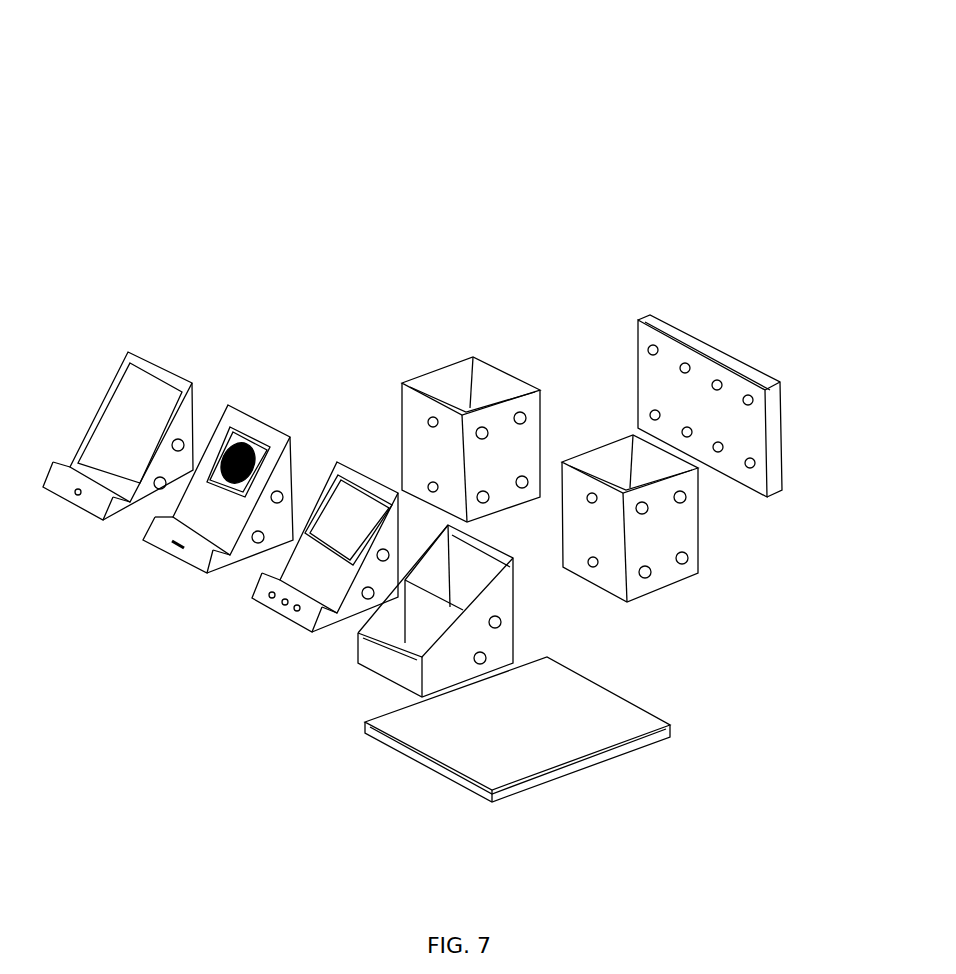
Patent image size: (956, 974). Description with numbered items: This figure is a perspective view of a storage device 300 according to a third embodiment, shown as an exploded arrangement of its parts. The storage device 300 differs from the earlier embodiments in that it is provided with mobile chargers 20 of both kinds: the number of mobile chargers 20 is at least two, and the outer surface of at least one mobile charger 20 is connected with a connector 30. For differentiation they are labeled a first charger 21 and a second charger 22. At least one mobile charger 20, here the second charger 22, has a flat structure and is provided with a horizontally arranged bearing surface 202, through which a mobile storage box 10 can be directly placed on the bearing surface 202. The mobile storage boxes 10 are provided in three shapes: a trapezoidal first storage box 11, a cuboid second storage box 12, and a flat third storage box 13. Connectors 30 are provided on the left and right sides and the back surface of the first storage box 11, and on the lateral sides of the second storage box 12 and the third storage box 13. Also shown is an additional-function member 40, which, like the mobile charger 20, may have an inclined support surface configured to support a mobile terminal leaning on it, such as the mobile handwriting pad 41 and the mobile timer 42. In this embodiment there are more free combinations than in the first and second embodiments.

The storage device 300 is at (52, 46).
The additional-function member 40 is at (133, 230).
The mobile handwriting pad 41 is at (139, 348).
The mobile timer 42 is at (350, 467).
The mobile charger 20 is at (153, 833).
The first charger 21 is at (182, 560).
The second charger 22 is at (367, 746).
The bearing surface 202 is at (513, 737).
The connector 30 is at (533, 410).
The mobile storage box 10 is at (843, 533).
The first storage box 11 is at (507, 643).
The second storage box 12 is at (698, 573).
The third storage box 13 is at (767, 497).